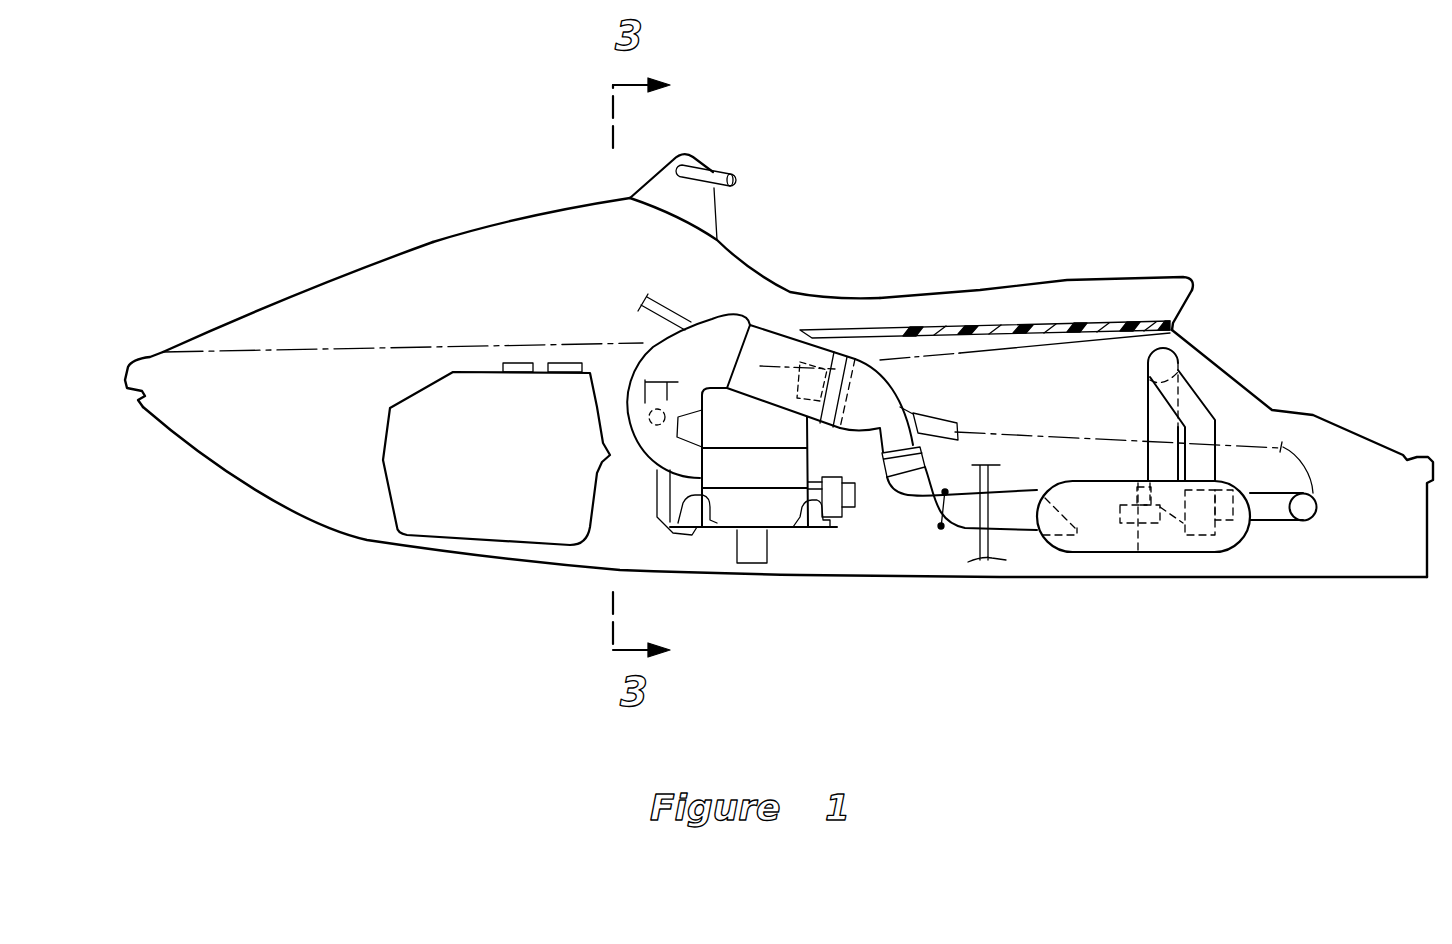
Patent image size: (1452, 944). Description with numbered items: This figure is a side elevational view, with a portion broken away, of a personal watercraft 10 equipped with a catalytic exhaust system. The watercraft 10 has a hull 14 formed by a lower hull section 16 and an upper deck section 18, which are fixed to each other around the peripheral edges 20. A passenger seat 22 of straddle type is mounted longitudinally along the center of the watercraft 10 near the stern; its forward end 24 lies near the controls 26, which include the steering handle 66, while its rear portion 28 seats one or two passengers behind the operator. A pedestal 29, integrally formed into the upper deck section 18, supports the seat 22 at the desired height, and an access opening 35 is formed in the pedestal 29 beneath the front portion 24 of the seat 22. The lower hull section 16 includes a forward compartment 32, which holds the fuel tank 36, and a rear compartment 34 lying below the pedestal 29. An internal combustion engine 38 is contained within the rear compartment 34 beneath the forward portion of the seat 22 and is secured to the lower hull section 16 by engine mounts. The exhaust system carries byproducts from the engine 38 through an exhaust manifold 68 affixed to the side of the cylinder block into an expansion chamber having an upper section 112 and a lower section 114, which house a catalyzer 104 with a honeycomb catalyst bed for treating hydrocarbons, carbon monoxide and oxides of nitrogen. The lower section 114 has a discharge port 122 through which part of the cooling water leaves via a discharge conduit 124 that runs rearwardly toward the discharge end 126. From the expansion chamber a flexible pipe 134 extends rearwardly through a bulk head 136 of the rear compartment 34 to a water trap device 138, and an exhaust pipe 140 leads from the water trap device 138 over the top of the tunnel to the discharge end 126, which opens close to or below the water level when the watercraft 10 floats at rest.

The personal watercraft 10 is at (1197, 148).
The hull 14 is at (315, 253).
The lower hull section 16 is at (288, 468).
The upper deck section 18 is at (470, 272).
The peripheral edges 20 is at (138, 377).
The passenger seat 22 is at (1097, 157).
The forward end of the seat 24 is at (993, 287).
The controls 26 is at (690, 140).
The rear portion of the seat 28 is at (1052, 337).
The pedestal 29 is at (1117, 317).
The forward compartment 32 is at (637, 530).
The rear compartment 34 is at (1131, 400).
The access opening 35 is at (900, 337).
The fuel tank 36 is at (385, 503).
The internal combustion engine 38 is at (787, 545).
The steering handle 66 is at (717, 170).
The exhaust manifold 68 is at (742, 470).
The catalyzer 104 is at (813, 327).
The upper section of the expansion chamber 112 is at (770, 343).
The lower section of the expansion chamber 114 is at (880, 423).
The discharge port 122 is at (918, 405).
The discharge conduit 124 is at (947, 417).
The discharge end 126 is at (1313, 517).
The flexible pipe 134 is at (930, 513).
The bulk head 136 is at (1003, 567).
The water trap device 138 is at (1122, 553).
The exhaust pipe 140 is at (1210, 400).